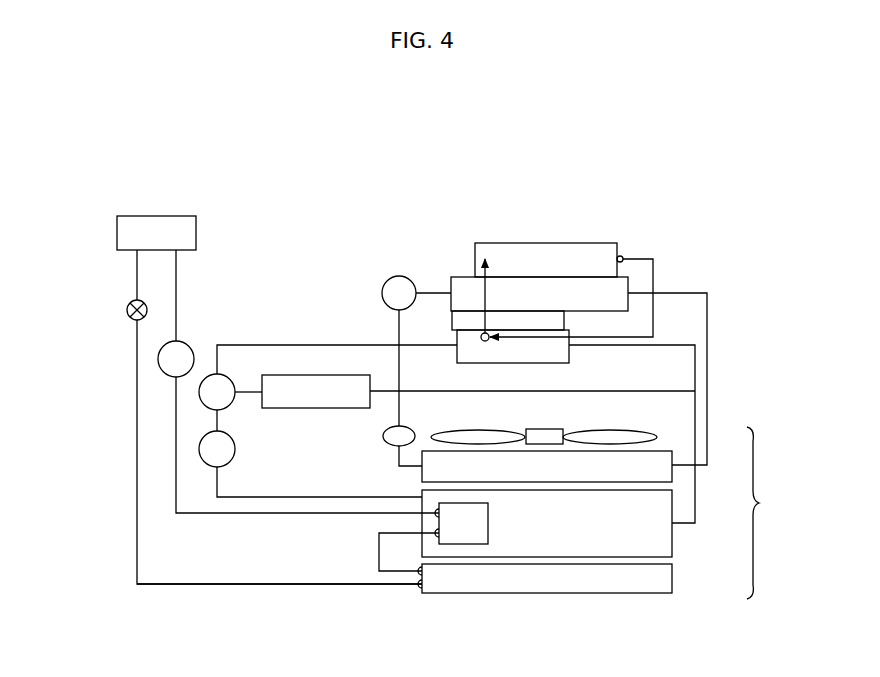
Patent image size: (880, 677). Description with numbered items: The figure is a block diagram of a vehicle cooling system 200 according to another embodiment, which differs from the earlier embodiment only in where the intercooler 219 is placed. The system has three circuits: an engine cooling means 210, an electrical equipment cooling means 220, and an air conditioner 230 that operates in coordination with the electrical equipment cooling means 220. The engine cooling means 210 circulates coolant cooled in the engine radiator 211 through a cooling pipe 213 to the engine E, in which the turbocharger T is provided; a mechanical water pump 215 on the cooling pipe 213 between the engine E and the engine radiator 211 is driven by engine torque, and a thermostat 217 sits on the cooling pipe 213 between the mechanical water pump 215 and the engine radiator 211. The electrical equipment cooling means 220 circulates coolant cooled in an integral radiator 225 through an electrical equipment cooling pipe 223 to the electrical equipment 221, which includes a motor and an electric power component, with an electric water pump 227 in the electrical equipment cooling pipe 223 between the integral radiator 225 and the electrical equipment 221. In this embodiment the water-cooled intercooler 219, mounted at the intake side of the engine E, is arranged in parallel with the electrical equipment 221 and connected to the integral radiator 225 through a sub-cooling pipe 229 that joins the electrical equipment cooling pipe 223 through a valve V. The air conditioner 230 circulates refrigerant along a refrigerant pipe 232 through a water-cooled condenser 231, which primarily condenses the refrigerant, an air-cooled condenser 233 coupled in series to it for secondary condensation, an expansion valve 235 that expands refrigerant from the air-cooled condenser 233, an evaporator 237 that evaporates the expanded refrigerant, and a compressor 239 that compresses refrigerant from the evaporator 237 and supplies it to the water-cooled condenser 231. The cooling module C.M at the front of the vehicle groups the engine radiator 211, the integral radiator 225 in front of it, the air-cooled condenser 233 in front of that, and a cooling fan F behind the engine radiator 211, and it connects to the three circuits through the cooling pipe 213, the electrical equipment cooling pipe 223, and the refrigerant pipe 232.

The vehicle cooling system 200 is at (431, 179).
The engine cooling means 210 is at (690, 254).
The engine radiator 211 is at (673, 461).
The cooling pipe 213 is at (709, 372).
The mechanical water pump 215 is at (398, 274).
The thermostat 217 is at (382, 440).
The intercooler 219 is at (571, 351).
The electrical equipment cooling means 220 is at (310, 324).
The electrical equipment 221 is at (338, 374).
The electrical equipment cooling pipe 223 is at (283, 496).
The integral radiator 225 is at (673, 537).
The electric water pump 227 is at (234, 442).
The sub-cooling pipe 229 is at (260, 343).
The air conditioner 230 is at (130, 401).
The water-cooled condenser 231 is at (490, 523).
The refrigerant pipe 232 is at (259, 586).
The air-cooled condenser 233 is at (673, 577).
The expansion valve 235 is at (127, 310).
The evaporator 237 is at (155, 215).
The compressor 239 is at (168, 376).
The turbocharger T is at (571, 242).
The engine E is at (450, 276).
The valve V is at (229, 380).
The cooling fan F is at (650, 437).
The cooling module C.M is at (772, 513).